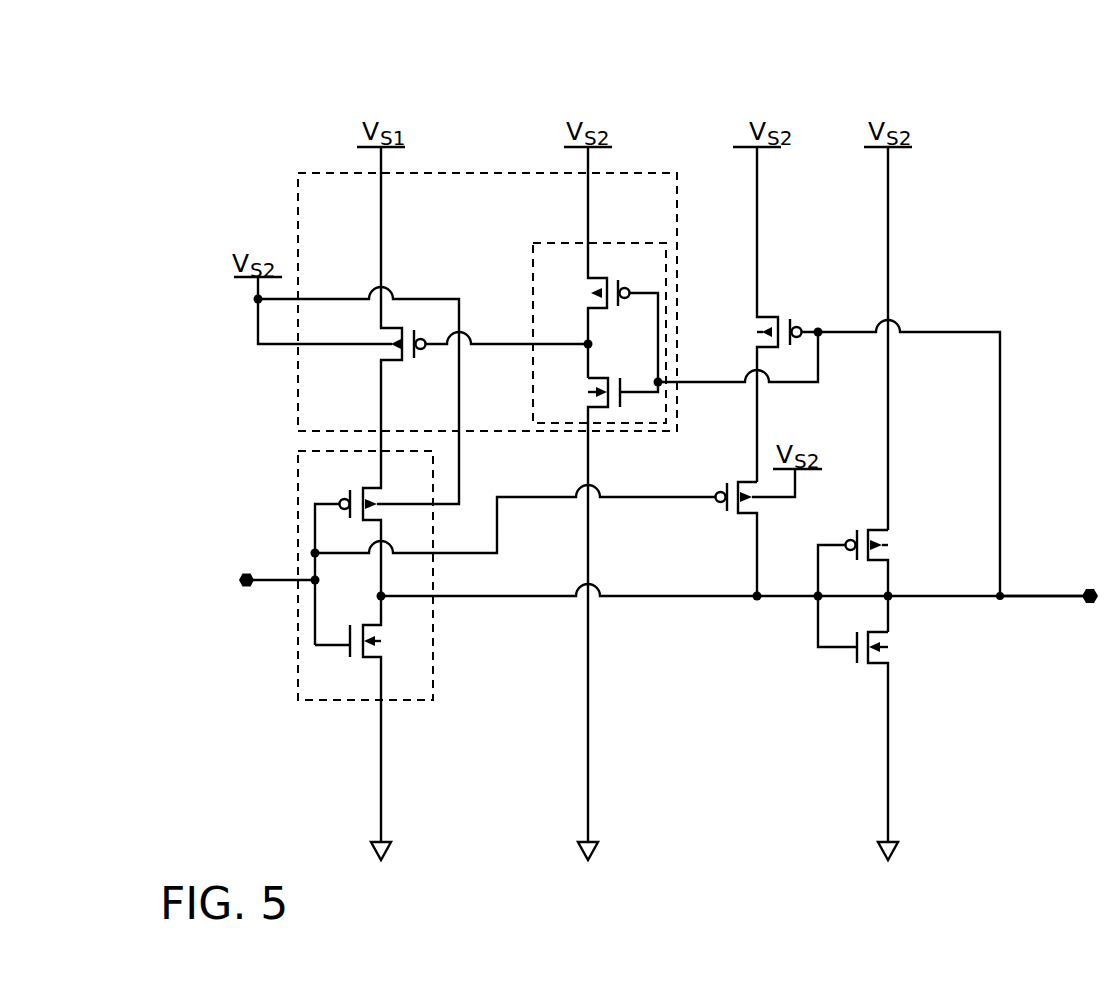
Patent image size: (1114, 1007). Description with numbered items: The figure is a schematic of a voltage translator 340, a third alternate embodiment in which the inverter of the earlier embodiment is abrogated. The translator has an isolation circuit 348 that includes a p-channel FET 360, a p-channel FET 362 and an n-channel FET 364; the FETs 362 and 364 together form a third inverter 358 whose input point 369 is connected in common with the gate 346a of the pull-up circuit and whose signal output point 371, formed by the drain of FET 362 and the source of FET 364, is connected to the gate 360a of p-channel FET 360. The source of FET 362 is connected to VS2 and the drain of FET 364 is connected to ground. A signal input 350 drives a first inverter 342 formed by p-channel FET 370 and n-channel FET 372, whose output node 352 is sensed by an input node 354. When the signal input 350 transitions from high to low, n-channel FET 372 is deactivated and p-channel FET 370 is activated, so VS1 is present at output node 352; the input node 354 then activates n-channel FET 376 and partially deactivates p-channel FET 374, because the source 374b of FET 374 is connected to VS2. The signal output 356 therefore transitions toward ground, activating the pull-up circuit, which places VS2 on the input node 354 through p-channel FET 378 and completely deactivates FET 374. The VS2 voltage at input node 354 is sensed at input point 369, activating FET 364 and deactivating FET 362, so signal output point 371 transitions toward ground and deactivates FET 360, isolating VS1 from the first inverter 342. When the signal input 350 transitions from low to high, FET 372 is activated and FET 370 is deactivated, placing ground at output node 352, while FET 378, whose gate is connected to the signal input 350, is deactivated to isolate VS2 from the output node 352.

The voltage translator 340 is at (984, 92).
The isolation circuit 348 is at (501, 172).
The third inverter 358 is at (520, 411).
The first inverter 342 is at (294, 487).
The p-channel FET 360 is at (399, 268).
The gate 360a is at (484, 345).
The signal output point 371 is at (585, 343).
The p-channel FET 362 is at (598, 284).
The n-channel FET 364 is at (605, 385).
The input point 369 is at (717, 382).
The gate 346a is at (860, 335).
The p-channel FET 370 is at (379, 501).
The n-channel FET 372 is at (382, 628).
The signal input 350 is at (263, 579).
The output node 352 is at (378, 596).
The p-channel FET 378 is at (770, 500).
The source 374b is at (868, 531).
The p-channel FET 374 is at (887, 555).
The input node 354 is at (815, 600).
The signal output 356 is at (1030, 598).
The n-channel FET 376 is at (889, 634).